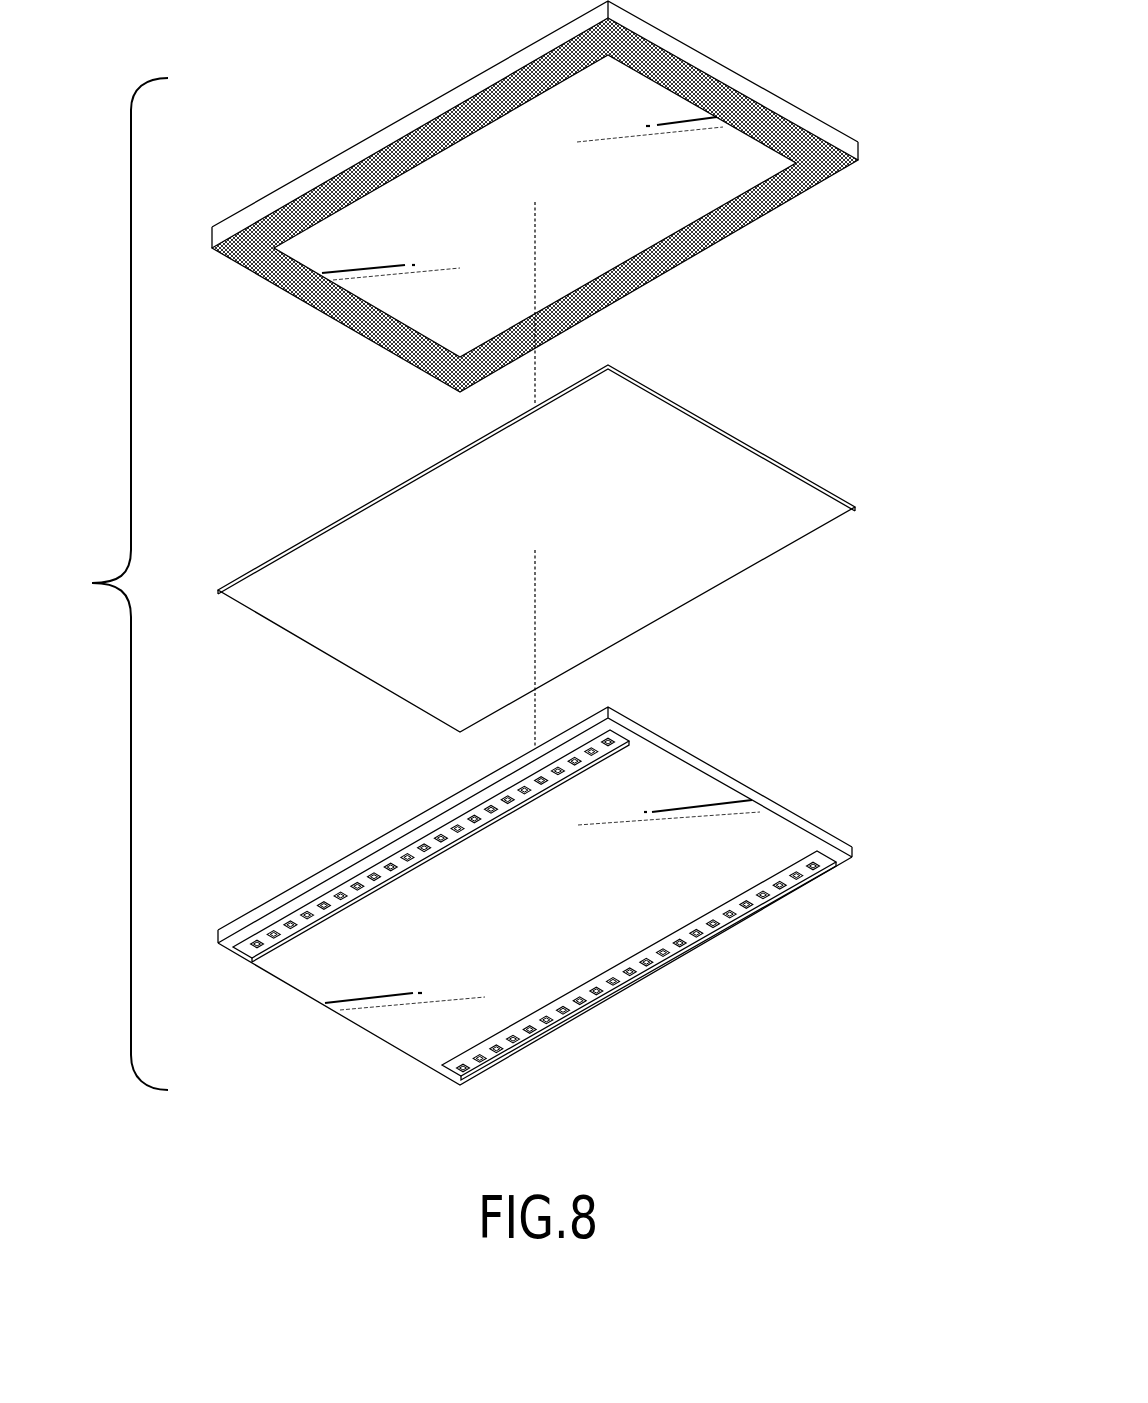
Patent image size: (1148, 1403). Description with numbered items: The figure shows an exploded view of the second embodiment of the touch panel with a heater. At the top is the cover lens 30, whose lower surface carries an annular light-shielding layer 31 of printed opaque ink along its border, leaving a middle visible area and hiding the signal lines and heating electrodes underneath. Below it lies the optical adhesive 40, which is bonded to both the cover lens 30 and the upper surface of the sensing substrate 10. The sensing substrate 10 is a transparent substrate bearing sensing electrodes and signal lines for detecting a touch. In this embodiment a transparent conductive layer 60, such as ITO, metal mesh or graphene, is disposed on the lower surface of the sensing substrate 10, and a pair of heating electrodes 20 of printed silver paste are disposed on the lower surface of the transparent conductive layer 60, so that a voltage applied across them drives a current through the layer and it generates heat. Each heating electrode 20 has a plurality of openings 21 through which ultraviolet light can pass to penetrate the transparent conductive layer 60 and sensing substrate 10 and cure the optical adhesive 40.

The sensing substrate 10 is at (753, 795).
The heating electrode 20 is at (328, 900).
The opening 21 is at (270, 935).
The cover lens 30 is at (760, 92).
The light-shielding layer 31 is at (767, 207).
The optical adhesive 40 is at (765, 453).
The transparent conductive layer 60 is at (410, 1035).